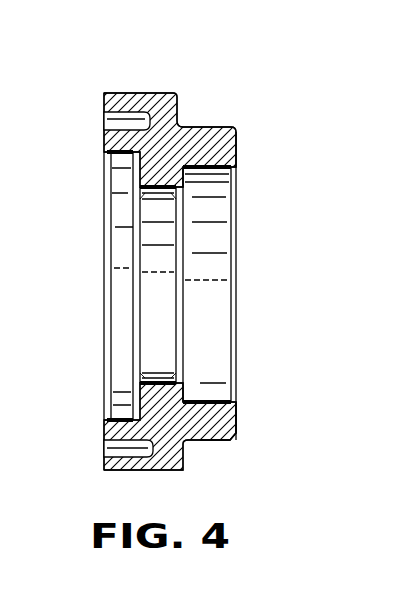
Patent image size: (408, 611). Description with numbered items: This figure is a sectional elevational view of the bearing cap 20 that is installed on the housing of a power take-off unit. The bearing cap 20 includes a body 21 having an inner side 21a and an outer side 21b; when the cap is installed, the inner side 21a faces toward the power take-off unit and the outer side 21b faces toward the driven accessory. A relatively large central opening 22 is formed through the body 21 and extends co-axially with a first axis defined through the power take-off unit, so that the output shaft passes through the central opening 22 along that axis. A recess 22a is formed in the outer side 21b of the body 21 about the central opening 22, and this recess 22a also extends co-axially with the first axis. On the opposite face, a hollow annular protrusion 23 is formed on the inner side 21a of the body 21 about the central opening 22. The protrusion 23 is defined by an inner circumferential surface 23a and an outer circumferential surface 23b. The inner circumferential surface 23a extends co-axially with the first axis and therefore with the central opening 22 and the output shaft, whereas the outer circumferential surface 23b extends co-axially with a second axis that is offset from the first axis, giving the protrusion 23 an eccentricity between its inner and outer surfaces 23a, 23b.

The bearing cap 20 is at (224, 76).
The body 21 is at (168, 457).
The inner side 21a is at (235, 423).
The outer side 21b is at (103, 436).
The central opening 22 is at (155, 195).
The recess 22a is at (137, 183).
The hollow annular protrusion 23 is at (224, 148).
The inner circumferential surface 23a is at (207, 168).
The outer circumferential surface 23b is at (212, 126).